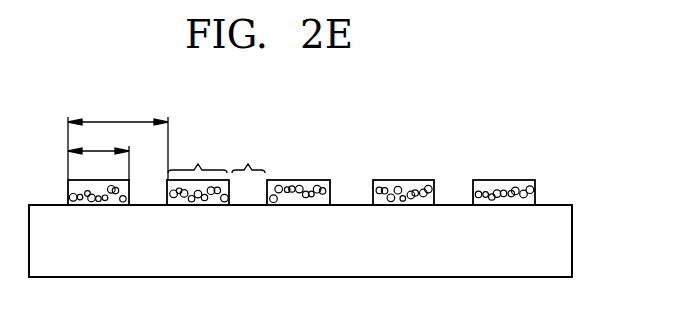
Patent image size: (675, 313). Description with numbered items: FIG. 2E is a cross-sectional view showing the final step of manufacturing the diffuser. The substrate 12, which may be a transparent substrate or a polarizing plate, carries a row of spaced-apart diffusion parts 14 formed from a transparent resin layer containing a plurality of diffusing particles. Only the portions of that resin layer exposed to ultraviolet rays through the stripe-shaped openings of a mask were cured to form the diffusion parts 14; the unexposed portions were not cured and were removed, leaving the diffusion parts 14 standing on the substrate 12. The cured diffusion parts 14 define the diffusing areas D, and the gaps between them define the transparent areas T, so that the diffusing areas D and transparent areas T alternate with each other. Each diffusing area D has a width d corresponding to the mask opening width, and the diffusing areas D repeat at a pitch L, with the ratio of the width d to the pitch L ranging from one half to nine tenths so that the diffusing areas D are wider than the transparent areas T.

The substrate 12 is at (566, 242).
The diffusion parts 14 is at (512, 186).
The pitch of the diffusing areas L is at (118, 140).
The width of the diffusing areas d is at (98, 153).
The diffusing areas D is at (197, 155).
The transparent areas T is at (248, 155).